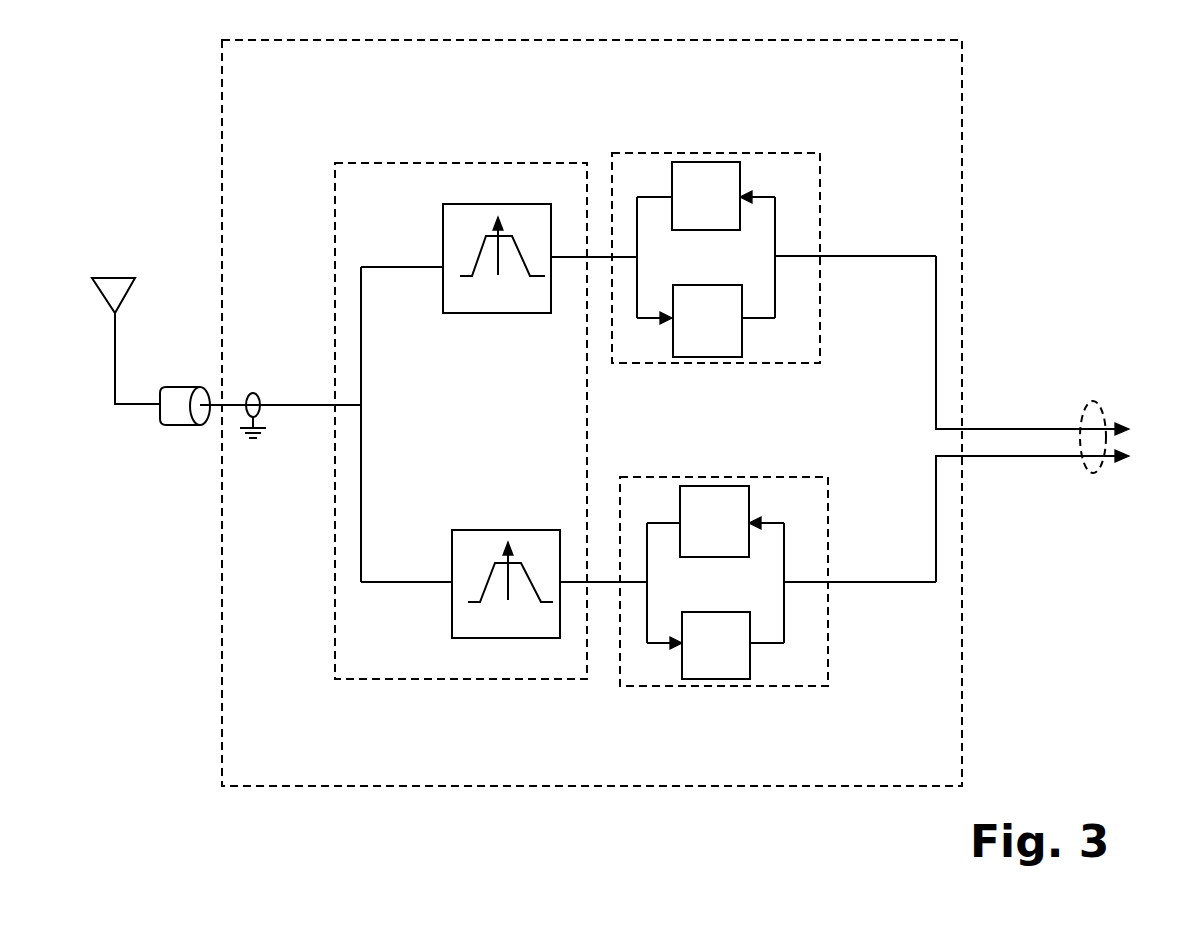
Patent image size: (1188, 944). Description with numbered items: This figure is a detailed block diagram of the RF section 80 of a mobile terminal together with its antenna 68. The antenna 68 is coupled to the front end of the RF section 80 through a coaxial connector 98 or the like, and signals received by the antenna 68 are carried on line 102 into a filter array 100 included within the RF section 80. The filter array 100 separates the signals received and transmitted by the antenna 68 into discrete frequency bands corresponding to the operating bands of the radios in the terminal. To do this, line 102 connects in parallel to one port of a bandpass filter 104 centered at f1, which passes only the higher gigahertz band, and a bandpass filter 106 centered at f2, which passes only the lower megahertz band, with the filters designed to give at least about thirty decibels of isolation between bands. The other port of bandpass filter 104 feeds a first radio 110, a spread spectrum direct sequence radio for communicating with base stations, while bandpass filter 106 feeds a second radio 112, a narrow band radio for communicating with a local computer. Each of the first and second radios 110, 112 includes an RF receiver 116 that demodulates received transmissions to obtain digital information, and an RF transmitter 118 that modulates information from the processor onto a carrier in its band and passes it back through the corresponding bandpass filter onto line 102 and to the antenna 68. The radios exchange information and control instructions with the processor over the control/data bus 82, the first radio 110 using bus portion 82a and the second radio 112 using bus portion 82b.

The RF section 80 is at (398, 40).
The antenna 68 is at (115, 355).
The coaxial connector 98 is at (190, 387).
The line 102 is at (311, 404).
The filter array 100 is at (458, 163).
The bandpass filter 104 is at (497, 320).
The bandpass filter 106 is at (500, 638).
The first radio 110 is at (818, 153).
The second radio 112 is at (826, 477).
The RF transmitter 118 is at (705, 162).
The RF receiver 116 is at (708, 357).
The control/data bus 82 is at (1100, 405).
The bus portion 82a is at (1073, 429).
The bus portion 82b is at (1075, 457).